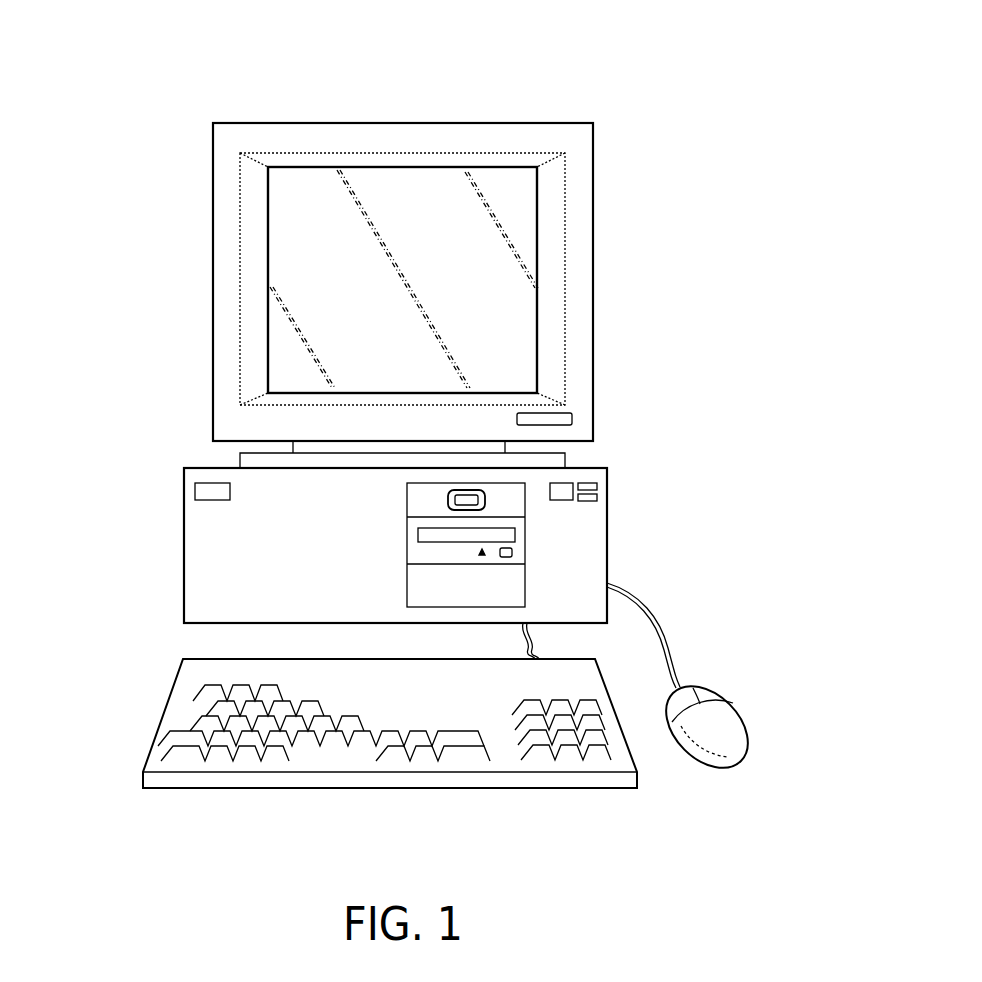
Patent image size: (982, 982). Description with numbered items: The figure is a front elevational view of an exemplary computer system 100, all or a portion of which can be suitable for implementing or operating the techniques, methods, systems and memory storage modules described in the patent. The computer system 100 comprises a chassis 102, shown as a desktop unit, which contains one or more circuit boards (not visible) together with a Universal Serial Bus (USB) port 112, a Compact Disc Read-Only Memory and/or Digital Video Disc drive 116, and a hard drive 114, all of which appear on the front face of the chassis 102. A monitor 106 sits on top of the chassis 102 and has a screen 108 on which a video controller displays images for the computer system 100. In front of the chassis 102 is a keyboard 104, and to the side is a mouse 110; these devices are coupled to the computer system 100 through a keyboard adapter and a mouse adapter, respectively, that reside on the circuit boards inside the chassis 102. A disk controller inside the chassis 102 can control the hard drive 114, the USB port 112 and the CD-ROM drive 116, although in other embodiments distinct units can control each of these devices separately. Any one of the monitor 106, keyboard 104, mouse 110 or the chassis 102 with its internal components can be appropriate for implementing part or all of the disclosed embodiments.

The computer system 100 is at (583, 100).
The chassis 102 is at (184, 550).
The keyboard 104 is at (166, 708).
The monitor 106 is at (290, 122).
The screen 108 is at (318, 285).
The mouse 110 is at (727, 715).
The Universal Serial Bus (USB) port 112 is at (485, 497).
The hard drive 114 is at (515, 583).
The CD-ROM and/or DVD drive 116 is at (515, 540).